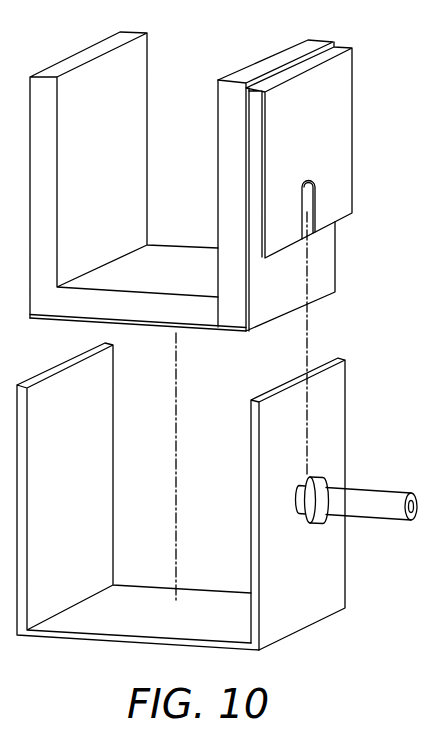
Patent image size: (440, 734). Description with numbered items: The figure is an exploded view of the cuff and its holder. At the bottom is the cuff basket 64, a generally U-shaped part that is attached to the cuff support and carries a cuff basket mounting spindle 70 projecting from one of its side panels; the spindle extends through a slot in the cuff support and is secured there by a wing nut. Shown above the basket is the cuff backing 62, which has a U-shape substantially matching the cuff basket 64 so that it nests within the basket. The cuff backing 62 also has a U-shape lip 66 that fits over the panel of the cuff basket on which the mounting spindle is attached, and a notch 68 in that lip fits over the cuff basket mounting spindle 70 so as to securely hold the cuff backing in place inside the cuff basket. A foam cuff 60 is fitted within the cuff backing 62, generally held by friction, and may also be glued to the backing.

The foam cuff 60 is at (230, 160).
The cuff backing 62 is at (323, 268).
The cuff basket 64 is at (295, 611).
The U-shape lip 66 is at (337, 107).
The notch 68 is at (307, 200).
The cuff basket mounting spindle 70 is at (393, 508).